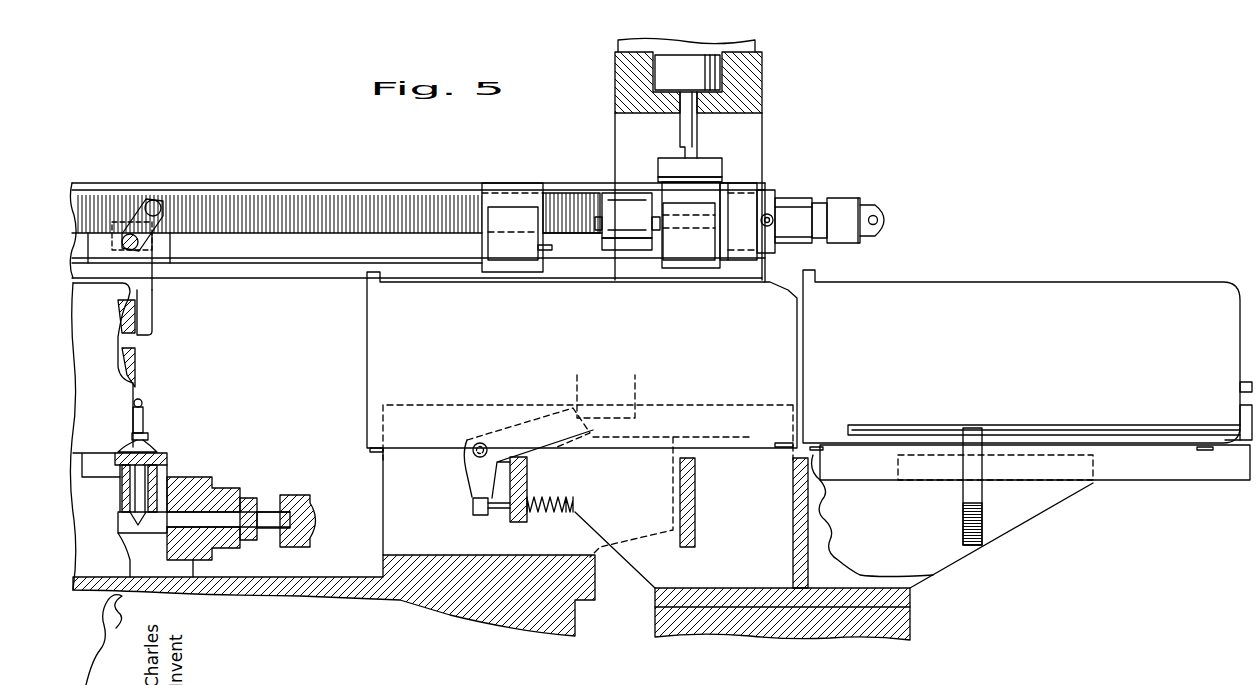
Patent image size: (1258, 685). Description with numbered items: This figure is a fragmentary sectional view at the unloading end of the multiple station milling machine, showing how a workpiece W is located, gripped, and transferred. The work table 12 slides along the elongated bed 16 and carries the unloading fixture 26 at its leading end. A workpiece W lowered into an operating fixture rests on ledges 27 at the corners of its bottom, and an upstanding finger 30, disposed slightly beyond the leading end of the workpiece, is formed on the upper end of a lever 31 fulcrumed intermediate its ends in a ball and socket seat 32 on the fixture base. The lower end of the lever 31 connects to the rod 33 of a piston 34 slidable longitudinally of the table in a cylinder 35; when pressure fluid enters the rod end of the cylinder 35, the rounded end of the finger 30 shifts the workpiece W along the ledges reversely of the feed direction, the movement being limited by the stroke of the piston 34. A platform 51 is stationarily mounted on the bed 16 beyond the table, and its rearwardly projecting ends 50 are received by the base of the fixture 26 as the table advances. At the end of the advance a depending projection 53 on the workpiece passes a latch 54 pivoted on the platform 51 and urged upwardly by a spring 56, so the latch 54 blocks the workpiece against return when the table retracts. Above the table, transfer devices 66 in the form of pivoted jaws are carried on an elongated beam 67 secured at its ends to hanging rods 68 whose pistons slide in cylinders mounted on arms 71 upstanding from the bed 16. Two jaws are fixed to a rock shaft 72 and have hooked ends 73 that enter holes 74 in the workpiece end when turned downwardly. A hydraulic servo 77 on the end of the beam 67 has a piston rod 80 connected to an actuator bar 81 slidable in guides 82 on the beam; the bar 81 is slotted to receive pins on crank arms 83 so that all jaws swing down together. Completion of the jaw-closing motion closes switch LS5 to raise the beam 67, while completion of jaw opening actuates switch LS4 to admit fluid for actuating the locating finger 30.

The work table 12 is at (503, 620).
The bed 16 is at (910, 620).
The unloading fixture 26 is at (750, 438).
The ledges 27 is at (110, 450).
The upstanding finger 30 is at (145, 420).
The lever 31 is at (140, 492).
The ball and socket seat 32 is at (150, 443).
The rod 33 is at (250, 523).
The piston 34 is at (273, 513).
The cylinder 35 is at (260, 510).
The rearwardly projecting ends 50 is at (867, 480).
The platform 51 is at (1028, 515).
The depending projection 53 is at (573, 390).
The latch 54 is at (592, 433).
The spring 56 is at (550, 500).
The transfer devices 66 is at (152, 302).
The beam 67 is at (230, 184).
The rods 68 is at (697, 138).
The arms 71 is at (762, 140).
The rock shaft 72 is at (125, 250).
The hooked ends 73 is at (122, 332).
The holes 74 is at (135, 348).
The hydraulic servo 77 is at (835, 193).
The piston rod 80 is at (686, 206).
The actuator bar 81 is at (582, 202).
The guides 82 is at (155, 205).
The crank arms 83 is at (143, 212).
The switch LS4 is at (525, 262).
The switch LS5 is at (672, 256).
The workpiece W is at (135, 372).